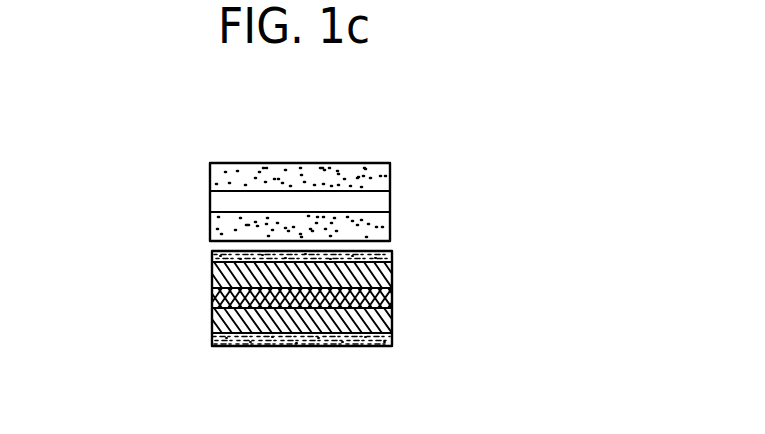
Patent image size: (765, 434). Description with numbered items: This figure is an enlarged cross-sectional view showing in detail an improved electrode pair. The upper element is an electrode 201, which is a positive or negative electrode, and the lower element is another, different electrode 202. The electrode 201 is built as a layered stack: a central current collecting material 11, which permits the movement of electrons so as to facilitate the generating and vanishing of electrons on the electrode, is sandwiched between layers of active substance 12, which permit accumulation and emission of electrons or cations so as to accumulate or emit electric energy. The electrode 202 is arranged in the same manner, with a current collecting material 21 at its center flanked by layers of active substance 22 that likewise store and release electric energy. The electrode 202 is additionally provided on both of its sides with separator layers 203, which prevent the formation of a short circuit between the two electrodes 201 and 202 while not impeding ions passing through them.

The electrode 201 is at (338, 172).
The active substance 12 is at (392, 175).
The current collecting material 11 is at (383, 202).
The electrode 202 is at (289, 328).
The separator layers 203 is at (212, 257).
The active substance 22 is at (392, 270).
The current collecting material 21 is at (212, 296).